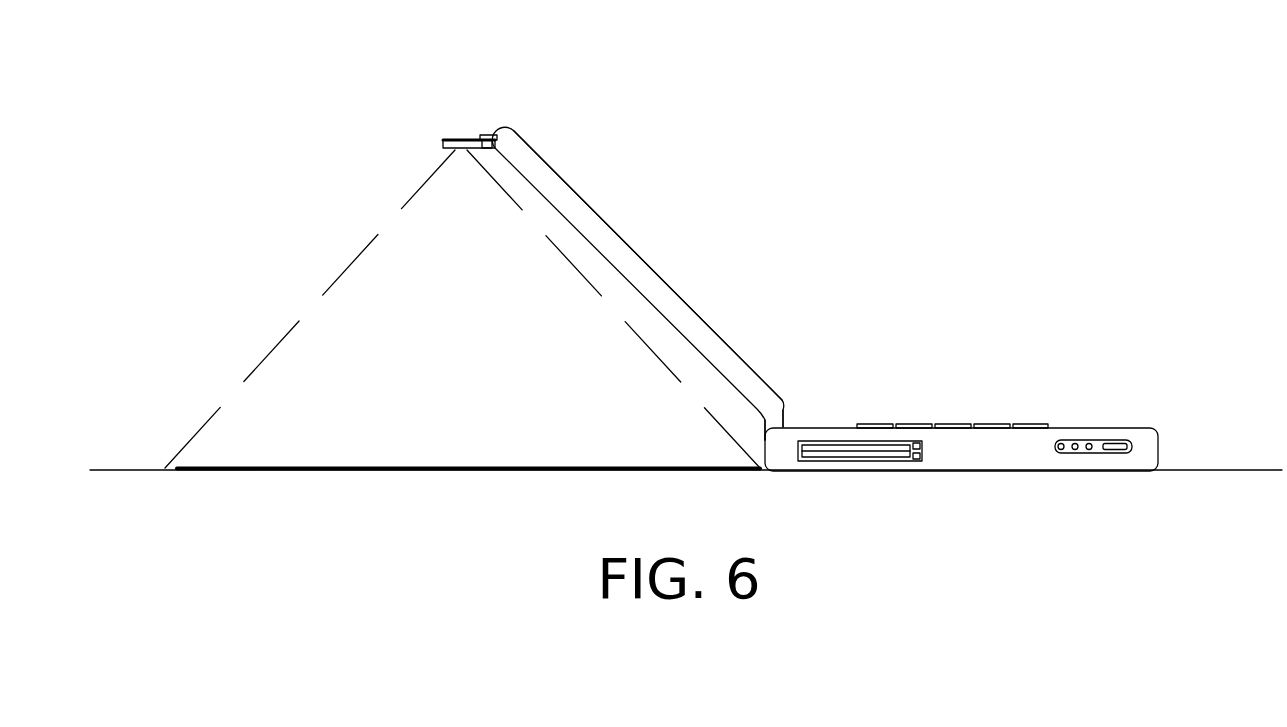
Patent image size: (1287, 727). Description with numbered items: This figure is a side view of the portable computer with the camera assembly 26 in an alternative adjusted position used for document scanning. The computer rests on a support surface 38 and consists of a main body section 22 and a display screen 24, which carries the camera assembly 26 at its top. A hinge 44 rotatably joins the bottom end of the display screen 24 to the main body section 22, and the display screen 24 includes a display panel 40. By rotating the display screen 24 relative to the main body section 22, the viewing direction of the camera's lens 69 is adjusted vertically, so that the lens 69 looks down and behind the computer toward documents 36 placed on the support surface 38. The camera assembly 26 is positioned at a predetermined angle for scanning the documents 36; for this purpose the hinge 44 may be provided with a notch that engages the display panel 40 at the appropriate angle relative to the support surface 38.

The main body section 22 is at (993, 423).
The display screen 24 is at (608, 220).
The camera assembly 26 is at (457, 139).
The documents 36 is at (432, 465).
The support surface 38 is at (1228, 470).
The display panel 40 is at (700, 313).
The hinge 44 is at (783, 420).
The lens 69 is at (458, 150).